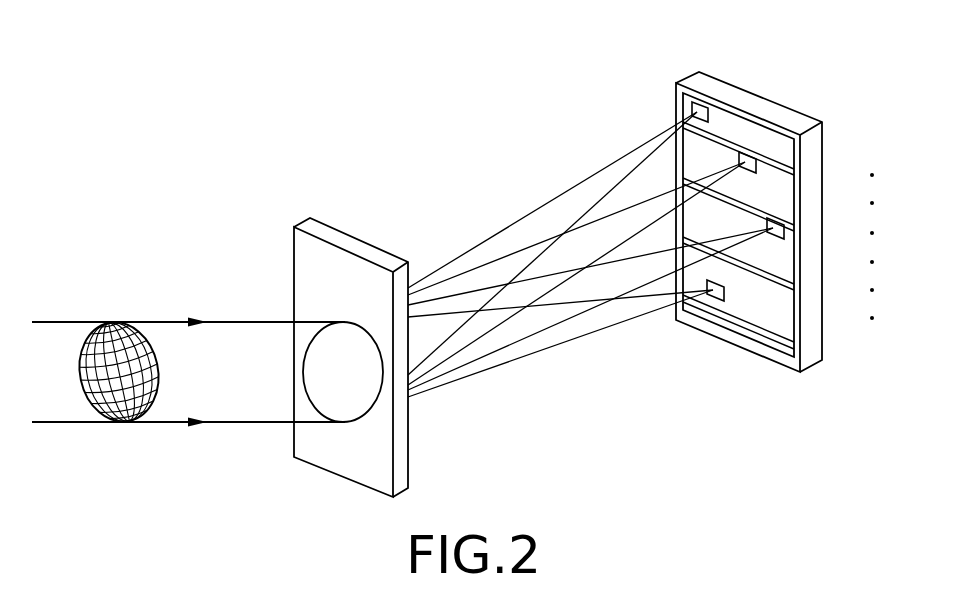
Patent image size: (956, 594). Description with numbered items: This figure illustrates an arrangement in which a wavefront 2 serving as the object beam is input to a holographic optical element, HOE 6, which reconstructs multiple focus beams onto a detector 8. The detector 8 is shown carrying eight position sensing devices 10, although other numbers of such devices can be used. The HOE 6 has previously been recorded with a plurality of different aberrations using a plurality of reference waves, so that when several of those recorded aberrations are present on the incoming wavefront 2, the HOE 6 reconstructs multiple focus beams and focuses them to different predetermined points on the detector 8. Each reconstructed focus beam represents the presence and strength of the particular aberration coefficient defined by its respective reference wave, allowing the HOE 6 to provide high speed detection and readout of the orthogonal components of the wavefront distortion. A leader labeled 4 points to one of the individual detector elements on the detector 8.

The wavefront 2 is at (118, 422).
The detector element 4 is at (695, 105).
The HOE 6 is at (333, 472).
The detector 8 is at (740, 350).
The position sensing devices 10 is at (779, 199).